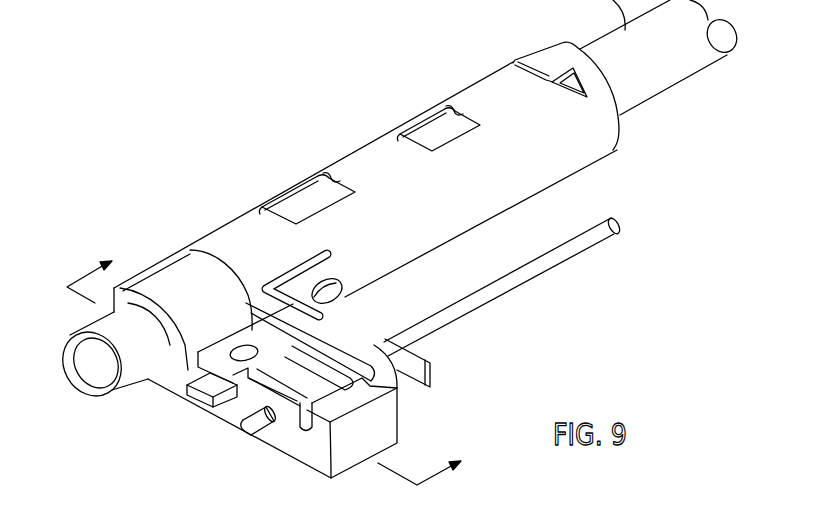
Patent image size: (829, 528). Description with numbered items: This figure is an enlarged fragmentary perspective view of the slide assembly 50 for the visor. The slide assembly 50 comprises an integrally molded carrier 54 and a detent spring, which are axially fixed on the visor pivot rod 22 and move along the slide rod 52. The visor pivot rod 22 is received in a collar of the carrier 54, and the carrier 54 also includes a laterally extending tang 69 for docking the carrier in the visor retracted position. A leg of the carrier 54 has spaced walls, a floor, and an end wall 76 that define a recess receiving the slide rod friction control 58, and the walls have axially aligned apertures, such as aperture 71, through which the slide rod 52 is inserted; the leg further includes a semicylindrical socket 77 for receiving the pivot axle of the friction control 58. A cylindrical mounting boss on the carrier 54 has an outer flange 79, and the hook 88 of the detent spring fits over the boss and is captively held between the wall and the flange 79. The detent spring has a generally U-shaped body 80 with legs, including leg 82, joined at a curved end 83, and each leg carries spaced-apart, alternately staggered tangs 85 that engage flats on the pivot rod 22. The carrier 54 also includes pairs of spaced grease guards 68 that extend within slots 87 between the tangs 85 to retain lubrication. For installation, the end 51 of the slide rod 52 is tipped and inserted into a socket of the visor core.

The slide assembly 50 is at (235, 102).
The visor pivot rod 22 is at (125, 377).
The end of slide rod 51 is at (237, 430).
The slide rod 52 is at (588, 250).
The carrier 54 is at (146, 258).
The slide rod friction control 58 is at (252, 330).
The grease guards 68 is at (333, 194).
The tang 69 is at (200, 395).
The aperture 71 is at (257, 437).
The end wall 76 is at (395, 438).
The semicylindrical socket 77 is at (300, 432).
The outer flange 79 is at (432, 358).
The U-shaped body 80 is at (452, 245).
The leg 82 is at (585, 112).
The curved end 83 is at (621, 134).
The tangs 85 is at (230, 221).
The slots 87 is at (276, 207).
The hook 88 is at (388, 371).